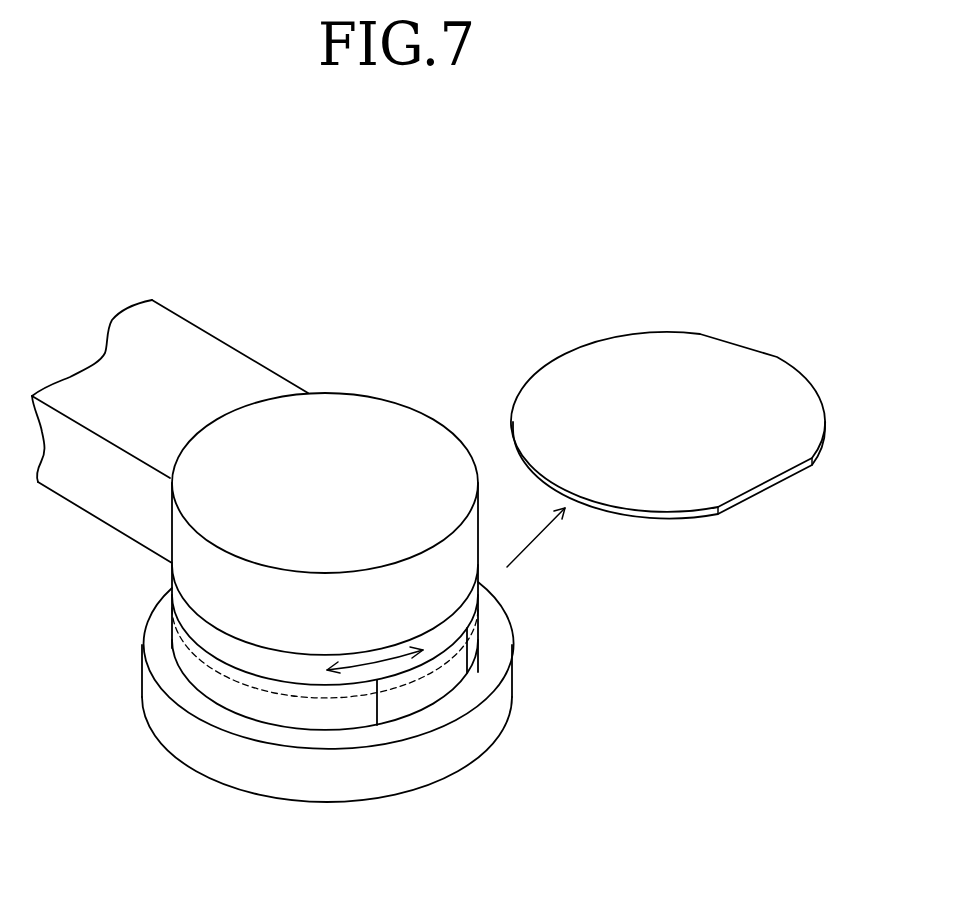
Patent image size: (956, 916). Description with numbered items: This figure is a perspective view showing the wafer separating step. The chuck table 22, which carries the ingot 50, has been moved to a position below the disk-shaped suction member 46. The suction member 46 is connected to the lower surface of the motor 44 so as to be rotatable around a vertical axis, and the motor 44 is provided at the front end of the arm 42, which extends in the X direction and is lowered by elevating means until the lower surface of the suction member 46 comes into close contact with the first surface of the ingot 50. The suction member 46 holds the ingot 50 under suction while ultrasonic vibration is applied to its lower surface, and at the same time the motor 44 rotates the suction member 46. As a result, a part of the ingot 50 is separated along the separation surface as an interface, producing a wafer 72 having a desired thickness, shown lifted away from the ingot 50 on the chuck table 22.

The chuck table 22 is at (202, 753).
The arm 42 is at (197, 340).
The motor 44 is at (385, 418).
The suction member 46 is at (470, 607).
The ingot 50 is at (472, 653).
The wafer 72 is at (585, 360).